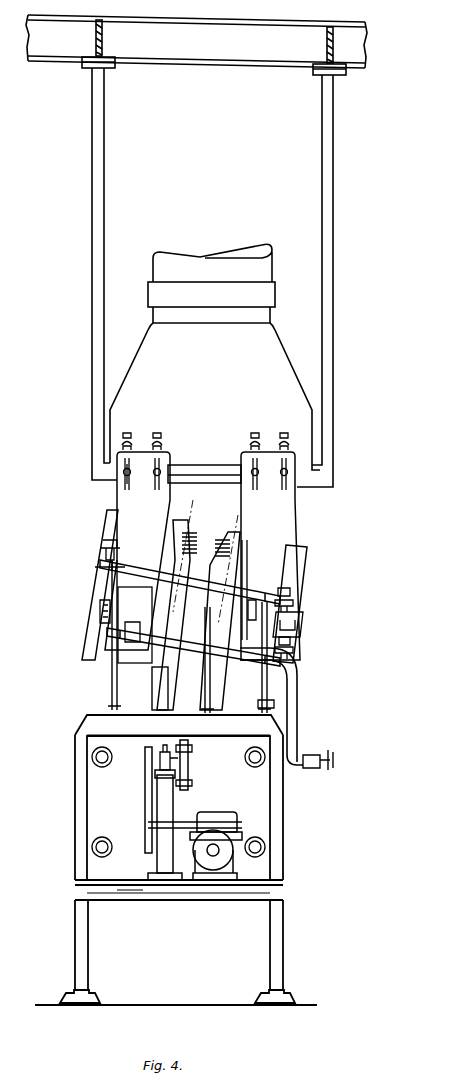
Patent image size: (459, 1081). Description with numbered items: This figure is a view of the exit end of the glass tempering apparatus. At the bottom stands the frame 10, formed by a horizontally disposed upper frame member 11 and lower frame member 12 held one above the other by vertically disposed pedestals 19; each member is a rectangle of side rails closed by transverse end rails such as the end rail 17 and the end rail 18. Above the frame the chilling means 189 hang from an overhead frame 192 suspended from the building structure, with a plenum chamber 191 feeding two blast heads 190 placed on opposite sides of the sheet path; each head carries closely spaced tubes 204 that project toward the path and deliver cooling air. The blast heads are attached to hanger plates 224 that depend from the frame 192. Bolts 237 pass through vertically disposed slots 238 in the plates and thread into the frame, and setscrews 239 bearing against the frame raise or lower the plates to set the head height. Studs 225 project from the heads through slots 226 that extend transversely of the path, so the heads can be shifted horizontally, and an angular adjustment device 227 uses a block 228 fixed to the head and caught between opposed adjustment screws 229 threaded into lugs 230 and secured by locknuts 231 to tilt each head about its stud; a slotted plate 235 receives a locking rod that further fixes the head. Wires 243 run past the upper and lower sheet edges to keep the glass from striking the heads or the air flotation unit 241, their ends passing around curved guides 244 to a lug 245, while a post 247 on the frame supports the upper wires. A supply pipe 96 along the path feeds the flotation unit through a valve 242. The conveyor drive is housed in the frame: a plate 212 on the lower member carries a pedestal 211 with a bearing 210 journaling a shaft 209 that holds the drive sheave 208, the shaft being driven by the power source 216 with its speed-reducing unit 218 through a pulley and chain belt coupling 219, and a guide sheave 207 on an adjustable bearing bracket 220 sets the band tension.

The chilling means 189 is at (137, 273).
The frame 192 is at (95, 282).
The plenum chamber 191 is at (147, 375).
The vertically disposed slots 238 is at (155, 462).
The setscrews 239 is at (157, 434).
The bolts 237 is at (155, 476).
The hanger plates 224 is at (130, 508).
The blast heads 190 is at (107, 537).
The tubes 204 is at (225, 537).
The wires 243 is at (278, 626).
The curved guides 244 is at (163, 583).
The studs 225 is at (125, 588).
The slots 226 is at (120, 582).
The angular adjustment device 227 is at (90, 571).
The air flotation unit 241 is at (247, 600).
The adjustment screws 229 is at (290, 590).
The lugs 230 is at (293, 603).
The locknuts 231 is at (289, 600).
The block 228 is at (286, 635).
The plate 235 is at (117, 597).
The post 247 is at (133, 632).
The adjustable bearing bracket 220 is at (163, 687).
The supply pipe 96 is at (290, 725).
The lug 245 is at (268, 703).
The valves 242 is at (322, 765).
The frame 10 is at (64, 877).
The upper frame member 11 is at (85, 734).
The lower frame member 12 is at (79, 896).
The pedestals 19 is at (77, 927).
The end rail 17 is at (133, 727).
The speed-reducing unit 218 is at (228, 853).
The power source 216 is at (252, 821).
The pedestal 211 is at (163, 800).
The bearing 210 is at (162, 762).
The pulley and chain belt coupling 219 is at (145, 815).
The guide sheave 207 is at (200, 717).
The drive sheave 208 is at (190, 750).
The shaft 209 is at (190, 783).
The plate 212 is at (117, 892).
The end rail 18 is at (143, 893).